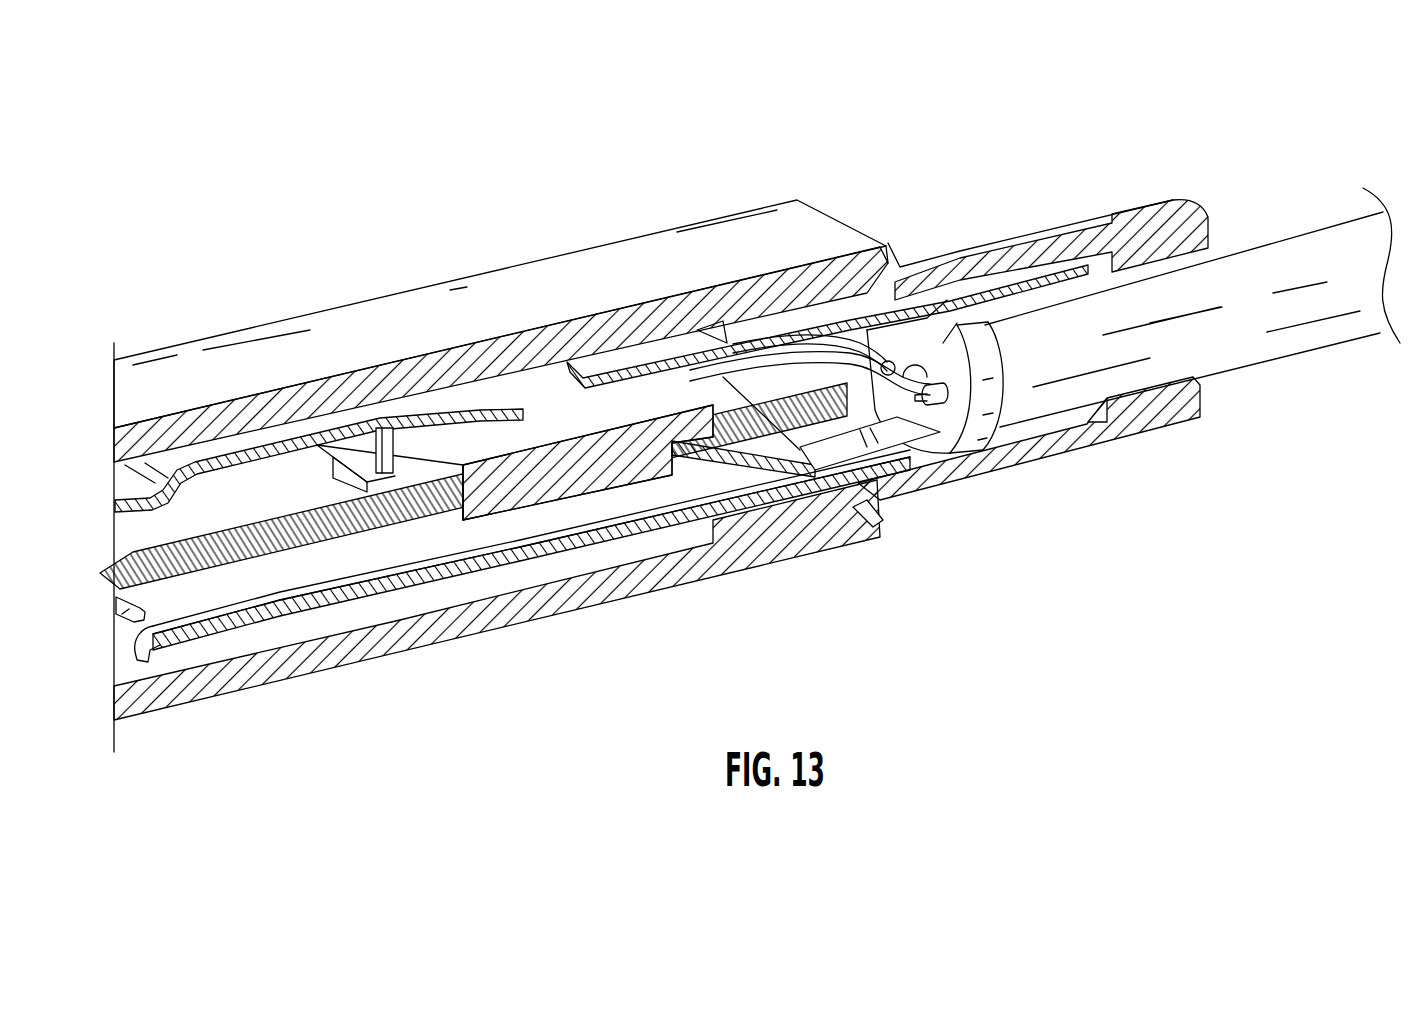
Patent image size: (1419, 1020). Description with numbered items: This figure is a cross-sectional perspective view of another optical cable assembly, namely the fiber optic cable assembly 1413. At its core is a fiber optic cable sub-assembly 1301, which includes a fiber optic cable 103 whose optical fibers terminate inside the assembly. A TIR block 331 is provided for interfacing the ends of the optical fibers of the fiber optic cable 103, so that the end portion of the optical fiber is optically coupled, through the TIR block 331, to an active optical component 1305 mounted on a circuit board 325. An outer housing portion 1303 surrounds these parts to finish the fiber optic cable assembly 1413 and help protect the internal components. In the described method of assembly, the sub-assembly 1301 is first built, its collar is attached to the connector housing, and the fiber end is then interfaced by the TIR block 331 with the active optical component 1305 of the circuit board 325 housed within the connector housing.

The fiber optic cable assembly 1413 is at (730, 163).
The fiber optic cable sub-assembly 1301 is at (1021, 192).
The fiber optic cable 103 is at (1275, 232).
The outer housing portion 1303 is at (597, 262).
The TIR block 331 is at (468, 448).
The circuit board 325 is at (252, 538).
The active optical component 1305 is at (347, 467).